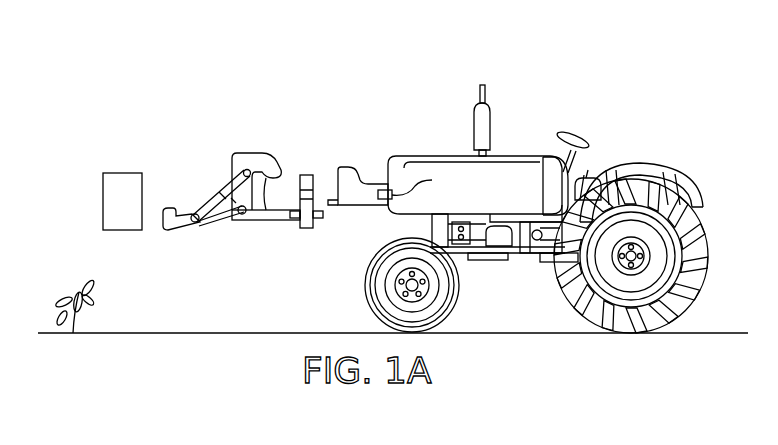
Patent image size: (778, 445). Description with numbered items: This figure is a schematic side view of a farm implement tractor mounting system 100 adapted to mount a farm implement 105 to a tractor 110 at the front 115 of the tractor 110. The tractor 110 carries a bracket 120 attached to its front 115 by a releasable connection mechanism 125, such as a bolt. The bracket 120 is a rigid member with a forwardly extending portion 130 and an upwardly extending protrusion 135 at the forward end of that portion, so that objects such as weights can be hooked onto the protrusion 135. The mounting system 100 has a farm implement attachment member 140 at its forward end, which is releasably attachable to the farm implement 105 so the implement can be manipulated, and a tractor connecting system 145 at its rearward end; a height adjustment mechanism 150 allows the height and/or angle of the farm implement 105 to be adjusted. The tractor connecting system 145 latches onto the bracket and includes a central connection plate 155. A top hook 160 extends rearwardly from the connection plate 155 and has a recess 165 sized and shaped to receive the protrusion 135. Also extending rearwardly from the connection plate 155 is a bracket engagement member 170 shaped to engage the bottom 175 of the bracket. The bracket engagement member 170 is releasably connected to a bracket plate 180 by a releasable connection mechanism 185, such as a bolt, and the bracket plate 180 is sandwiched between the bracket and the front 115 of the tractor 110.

The farm implement tractor mounting system 100 is at (284, 88).
The farm implement 105 is at (125, 170).
The tractor 110 is at (565, 66).
The front 115 is at (457, 82).
The bracket 120 is at (364, 160).
The releasable connection mechanism 125 is at (432, 182).
The forwardly extending portion 130 is at (350, 203).
The upwardly extending protrusion 135 is at (350, 166).
The farm implement attachment member 140 is at (191, 238).
The tractor connecting system 145 is at (286, 126).
The height adjustment mechanism 150 is at (216, 183).
The central connection plate 155 is at (225, 220).
The top hook 160 is at (262, 150).
The recess 165 is at (233, 206).
The bracket engagement member 170 is at (290, 222).
The bottom 175 is at (380, 205).
The bracket plate 180 is at (306, 175).
The releasable connection mechanism 185 is at (306, 230).